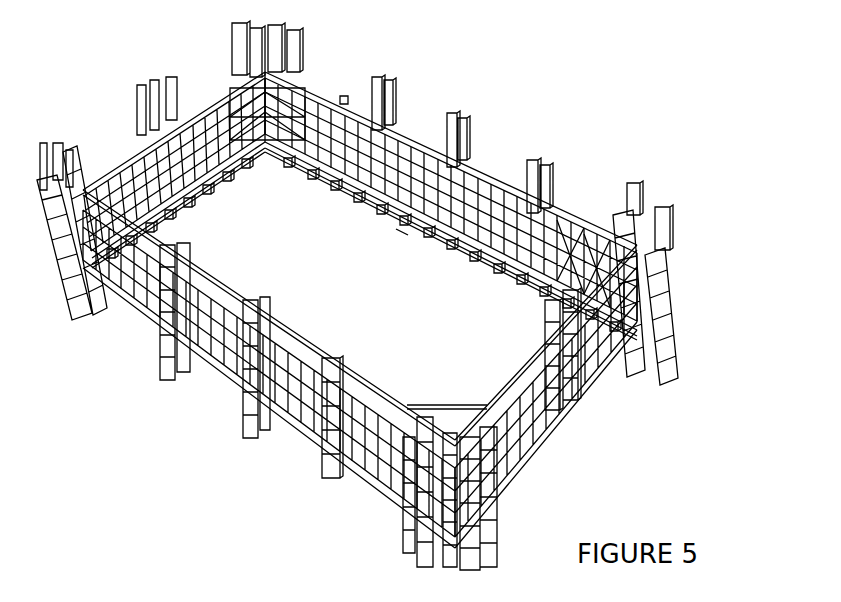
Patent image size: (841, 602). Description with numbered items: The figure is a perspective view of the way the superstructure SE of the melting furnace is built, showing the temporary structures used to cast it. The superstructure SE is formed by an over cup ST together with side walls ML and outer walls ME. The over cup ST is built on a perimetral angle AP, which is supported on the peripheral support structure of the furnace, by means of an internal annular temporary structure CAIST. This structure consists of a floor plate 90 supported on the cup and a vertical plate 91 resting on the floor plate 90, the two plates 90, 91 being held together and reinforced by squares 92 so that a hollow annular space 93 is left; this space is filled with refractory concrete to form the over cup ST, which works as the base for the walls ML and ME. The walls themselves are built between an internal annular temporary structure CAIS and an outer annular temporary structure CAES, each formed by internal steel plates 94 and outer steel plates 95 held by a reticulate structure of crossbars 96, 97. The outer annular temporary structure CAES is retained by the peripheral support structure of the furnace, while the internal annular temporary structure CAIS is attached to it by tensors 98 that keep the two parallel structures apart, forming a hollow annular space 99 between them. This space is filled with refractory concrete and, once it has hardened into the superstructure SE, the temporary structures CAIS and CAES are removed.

The floor plate 90 is at (353, 187).
The vertical plate 91 is at (327, 167).
The square 92 is at (447, 233).
The hollow annular space 93 is at (520, 272).
The internal steel plates 94 is at (404, 134).
The outer steel plates 95 is at (349, 89).
The crossbars 96 is at (503, 275).
The crossbars 97 is at (372, 462).
The tensors 98 is at (390, 470).
The hollow annular space 99 is at (197, 100).
The side walls ML is at (320, 85).
The outer walls ME is at (99, 160).
The over cup ST is at (200, 190).
The perimetral angle AP is at (394, 235).
The internal annular temporary structure CAIS is at (470, 178).
The outer annular temporary structure CAES is at (557, 208).
The internal annular temporary structure CAIST is at (467, 253).
The superstructure SE is at (243, 403).